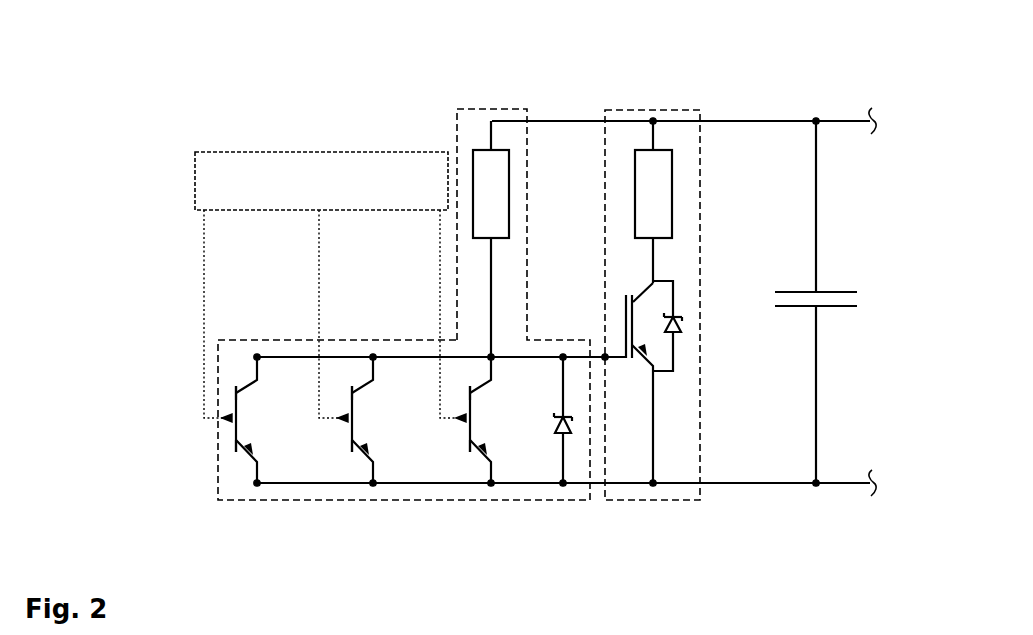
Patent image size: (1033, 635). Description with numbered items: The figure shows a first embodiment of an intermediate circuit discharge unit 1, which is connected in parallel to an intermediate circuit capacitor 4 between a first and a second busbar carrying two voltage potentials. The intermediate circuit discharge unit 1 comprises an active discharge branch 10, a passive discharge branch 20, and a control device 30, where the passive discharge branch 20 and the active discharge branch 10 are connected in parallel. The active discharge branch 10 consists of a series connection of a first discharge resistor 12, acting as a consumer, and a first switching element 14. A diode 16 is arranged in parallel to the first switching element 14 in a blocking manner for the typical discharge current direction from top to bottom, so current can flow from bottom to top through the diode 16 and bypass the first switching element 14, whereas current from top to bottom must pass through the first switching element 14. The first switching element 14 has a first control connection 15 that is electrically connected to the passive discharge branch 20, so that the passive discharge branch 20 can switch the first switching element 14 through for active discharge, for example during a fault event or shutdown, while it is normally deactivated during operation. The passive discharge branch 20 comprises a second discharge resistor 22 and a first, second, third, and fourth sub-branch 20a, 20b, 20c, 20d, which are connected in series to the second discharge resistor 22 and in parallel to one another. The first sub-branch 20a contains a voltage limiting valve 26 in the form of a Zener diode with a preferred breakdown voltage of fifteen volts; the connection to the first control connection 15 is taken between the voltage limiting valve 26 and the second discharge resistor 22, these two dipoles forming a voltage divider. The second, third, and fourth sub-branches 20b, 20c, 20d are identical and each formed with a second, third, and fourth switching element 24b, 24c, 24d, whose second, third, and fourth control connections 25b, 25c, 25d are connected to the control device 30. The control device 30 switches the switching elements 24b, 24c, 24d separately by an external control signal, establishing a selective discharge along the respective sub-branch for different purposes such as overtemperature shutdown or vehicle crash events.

The intermediate circuit discharge unit 1 is at (793, 75).
The intermediate circuit capacitor 4 is at (838, 293).
The active discharge branch 10 is at (650, 105).
The first discharge resistor 12 is at (672, 180).
The first switching element 14 is at (662, 382).
The first control connection 15 is at (607, 360).
The diode 16 is at (678, 324).
The passive discharge branch 20 is at (482, 105).
The first sub-branch 20a is at (558, 468).
The second sub-branch 20b is at (485, 468).
The third sub-branch 20c is at (366, 468).
The fourth sub-branch 20d is at (249, 468).
The second discharge resistor 22 is at (492, 186).
The second switching element 24b is at (468, 394).
The third switching element 24c is at (350, 394).
The fourth switching element 24d is at (232, 393).
The second control connection 25b is at (452, 468).
The third control connection 25c is at (336, 468).
The fourth control connection 25d is at (230, 422).
The voltage limiting valve 26 is at (560, 412).
The control device 30 is at (290, 170).